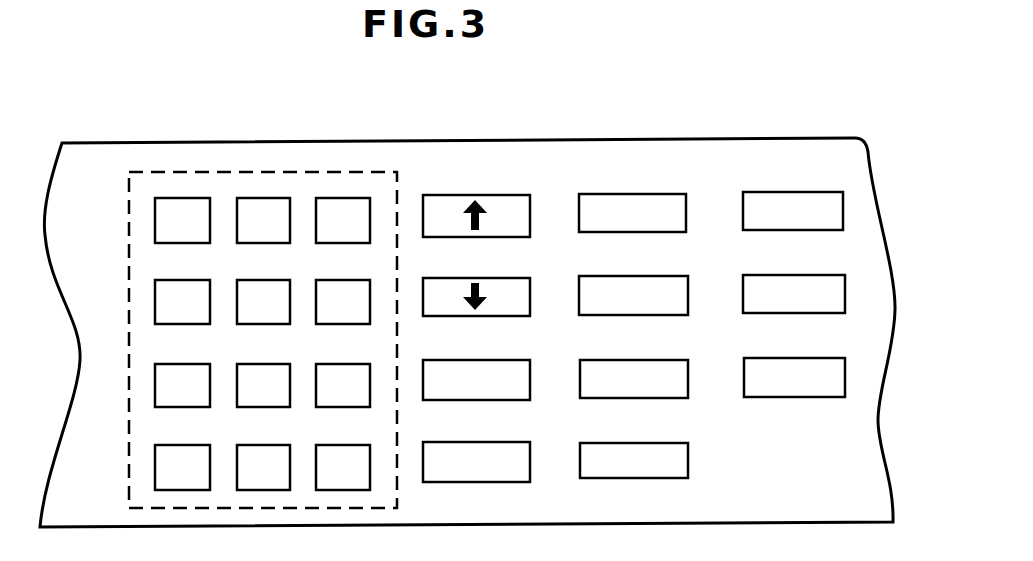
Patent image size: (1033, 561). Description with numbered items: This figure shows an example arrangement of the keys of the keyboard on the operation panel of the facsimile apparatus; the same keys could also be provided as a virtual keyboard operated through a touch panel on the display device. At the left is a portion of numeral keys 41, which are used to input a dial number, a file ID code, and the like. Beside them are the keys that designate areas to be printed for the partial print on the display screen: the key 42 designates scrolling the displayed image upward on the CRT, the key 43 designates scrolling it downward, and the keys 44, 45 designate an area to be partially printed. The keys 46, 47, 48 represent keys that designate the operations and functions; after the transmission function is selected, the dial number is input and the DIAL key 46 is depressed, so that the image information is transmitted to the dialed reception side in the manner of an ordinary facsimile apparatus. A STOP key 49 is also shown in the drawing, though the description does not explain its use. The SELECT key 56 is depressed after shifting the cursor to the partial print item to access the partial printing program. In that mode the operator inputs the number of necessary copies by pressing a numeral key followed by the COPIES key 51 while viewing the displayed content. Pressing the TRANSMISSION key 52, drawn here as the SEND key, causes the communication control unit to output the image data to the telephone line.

The numeral keys 41 is at (377, 170).
The upward scroll key 42 is at (512, 195).
The downward scroll key 43 is at (514, 278).
The partial print area designation key 44 is at (510, 360).
The partial print area designation key 45 is at (520, 442).
The DIAL key 46 is at (662, 194).
The operation and function designation key 47 is at (686, 276).
The operation and function designation key 48 is at (672, 360).
The stop key 49 is at (688, 452).
The SELECT key 56 is at (790, 192).
The COPIES key 51 is at (808, 275).
The TRANSMISSION key 52 is at (813, 358).